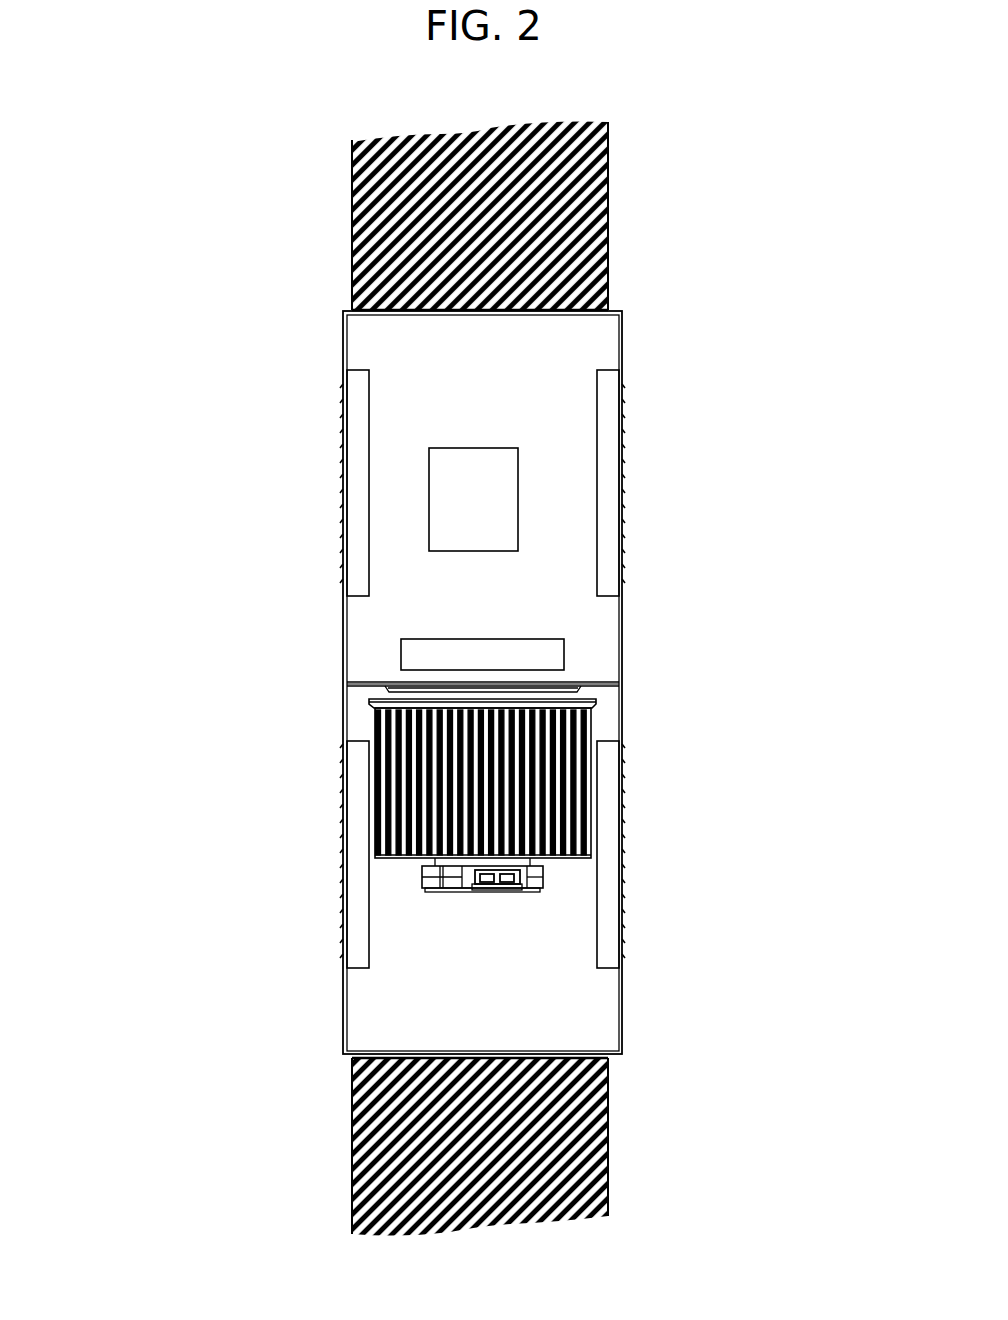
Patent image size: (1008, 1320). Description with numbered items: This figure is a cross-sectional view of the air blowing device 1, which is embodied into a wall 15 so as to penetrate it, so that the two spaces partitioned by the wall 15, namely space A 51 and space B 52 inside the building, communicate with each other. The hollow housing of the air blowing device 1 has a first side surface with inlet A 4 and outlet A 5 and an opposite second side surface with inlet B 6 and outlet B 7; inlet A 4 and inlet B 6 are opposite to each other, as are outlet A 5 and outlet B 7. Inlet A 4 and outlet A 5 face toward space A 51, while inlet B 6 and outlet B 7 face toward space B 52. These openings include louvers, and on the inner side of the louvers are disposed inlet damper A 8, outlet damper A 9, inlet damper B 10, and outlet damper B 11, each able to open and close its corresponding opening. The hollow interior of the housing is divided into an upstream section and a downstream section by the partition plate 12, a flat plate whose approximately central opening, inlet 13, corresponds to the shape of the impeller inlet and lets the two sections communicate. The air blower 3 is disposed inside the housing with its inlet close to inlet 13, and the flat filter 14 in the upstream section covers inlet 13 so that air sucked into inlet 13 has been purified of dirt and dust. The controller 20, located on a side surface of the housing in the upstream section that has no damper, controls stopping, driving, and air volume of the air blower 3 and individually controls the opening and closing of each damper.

The air blowing device 1 is at (148, 237).
The air blower 3 is at (503, 892).
The inlet A 4 is at (624, 395).
The outlet A 5 is at (623, 770).
The inlet B 6 is at (342, 404).
The outlet B 7 is at (342, 783).
The inlet damper A 8 is at (607, 487).
The outlet damper A 9 is at (604, 866).
The inlet damper B 10 is at (355, 483).
The outlet damper B 11 is at (355, 885).
The partition plate 12 is at (603, 679).
The inlet 13 is at (423, 685).
The filter 14 is at (537, 637).
The wall 15 is at (385, 207).
The controller 20 is at (495, 467).
The space A 51 is at (842, 568).
The space B 52 is at (170, 568).